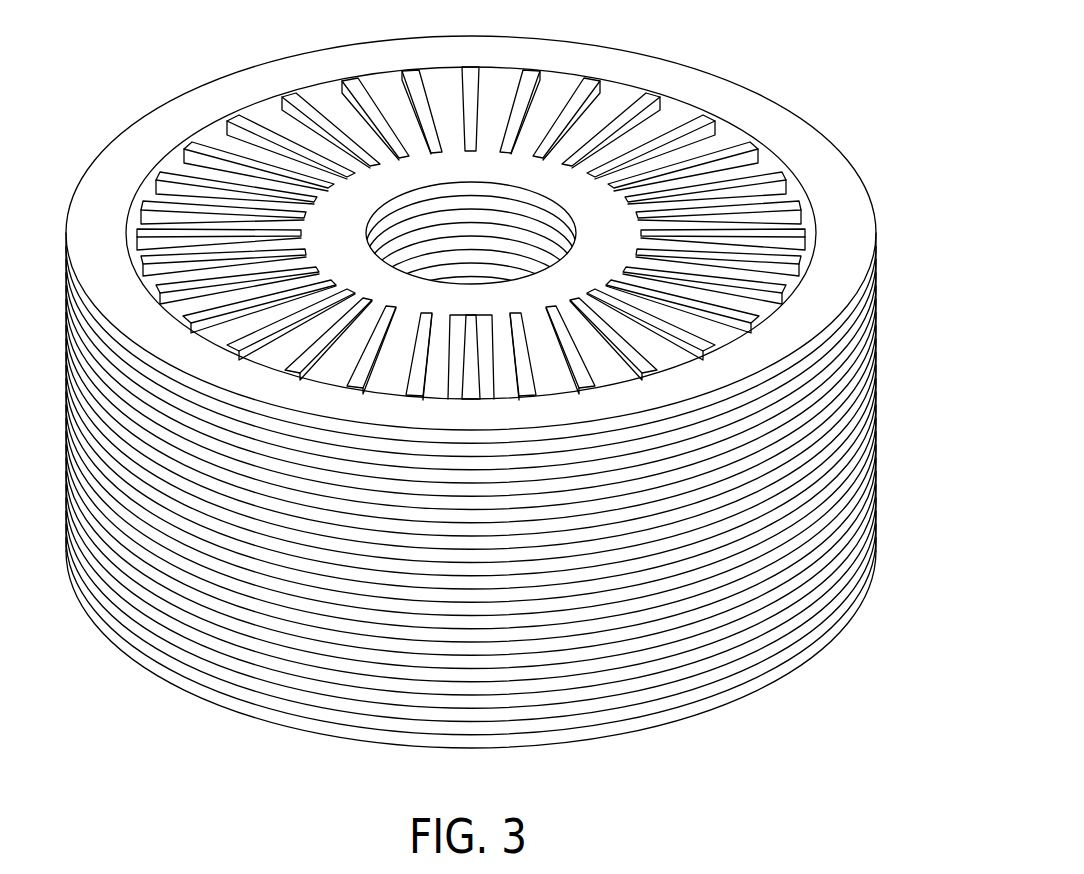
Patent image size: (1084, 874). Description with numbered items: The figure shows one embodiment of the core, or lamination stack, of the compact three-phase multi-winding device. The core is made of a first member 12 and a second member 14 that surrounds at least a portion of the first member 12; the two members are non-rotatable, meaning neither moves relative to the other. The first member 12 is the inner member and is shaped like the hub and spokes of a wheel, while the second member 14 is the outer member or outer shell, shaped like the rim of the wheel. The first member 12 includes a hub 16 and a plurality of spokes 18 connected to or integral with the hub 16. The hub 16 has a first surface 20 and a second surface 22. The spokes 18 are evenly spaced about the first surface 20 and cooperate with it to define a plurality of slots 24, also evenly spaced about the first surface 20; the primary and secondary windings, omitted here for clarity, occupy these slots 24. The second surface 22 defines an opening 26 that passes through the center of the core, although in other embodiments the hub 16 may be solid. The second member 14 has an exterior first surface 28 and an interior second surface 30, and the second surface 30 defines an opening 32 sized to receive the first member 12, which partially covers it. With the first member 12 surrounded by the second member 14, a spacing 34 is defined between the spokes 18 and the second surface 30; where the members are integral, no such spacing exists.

The first member 12 is at (504, 392).
The second member 14 is at (504, 392).
The hub 16 is at (457, 308).
The spokes 18 is at (623, 103).
The first surface 20 is at (315, 204).
The second surface 22 is at (366, 234).
The slots 24 is at (689, 128).
The opening 26 is at (457, 243).
The first surface 28 is at (878, 270).
The second surface 30 is at (613, 388).
The opening 32 is at (740, 253).
The spacing 34 is at (769, 162).